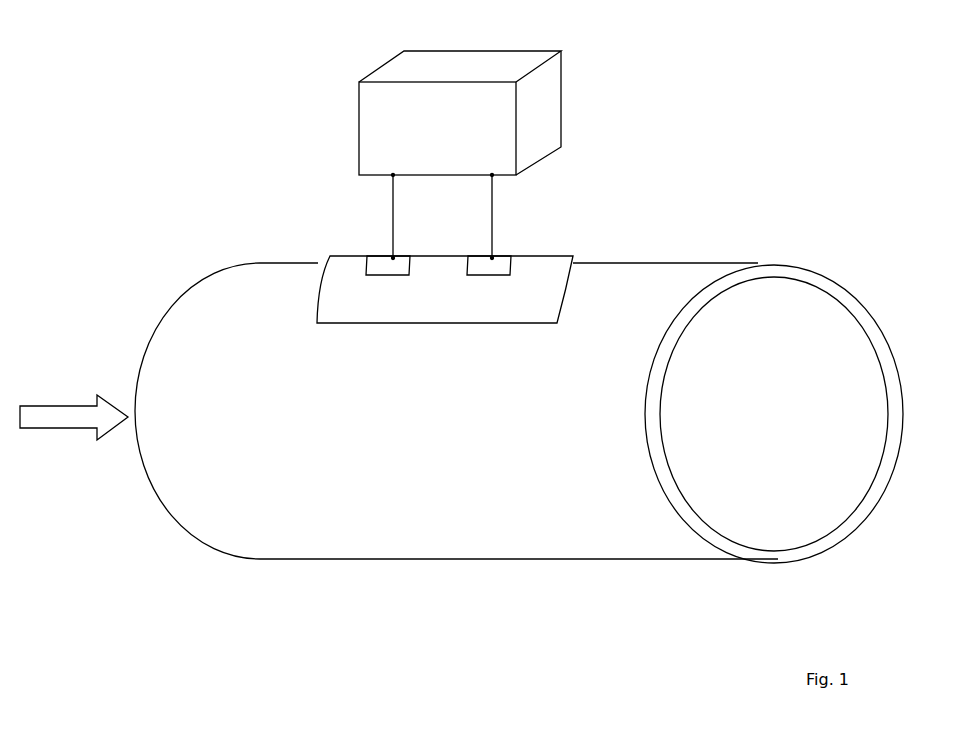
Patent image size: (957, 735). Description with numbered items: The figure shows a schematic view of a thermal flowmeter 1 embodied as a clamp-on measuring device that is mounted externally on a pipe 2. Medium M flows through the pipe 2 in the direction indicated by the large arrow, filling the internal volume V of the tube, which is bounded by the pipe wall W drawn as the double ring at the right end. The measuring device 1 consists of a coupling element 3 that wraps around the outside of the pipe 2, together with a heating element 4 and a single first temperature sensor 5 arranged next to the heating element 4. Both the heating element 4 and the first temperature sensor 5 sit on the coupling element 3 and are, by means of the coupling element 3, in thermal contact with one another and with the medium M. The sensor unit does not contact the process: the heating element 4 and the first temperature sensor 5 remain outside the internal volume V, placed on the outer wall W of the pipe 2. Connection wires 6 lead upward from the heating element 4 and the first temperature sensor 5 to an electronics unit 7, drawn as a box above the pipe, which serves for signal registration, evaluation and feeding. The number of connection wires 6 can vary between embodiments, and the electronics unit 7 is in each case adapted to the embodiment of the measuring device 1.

The thermal flowmeter 1 is at (221, 64).
The pipe 2 is at (261, 562).
The coupling element 3 is at (434, 319).
The heating element 4 is at (373, 263).
The first temperature sensor 5 is at (487, 261).
The connection wires 6 is at (486, 218).
The electronics unit 7 is at (460, 113).
The medium M is at (74, 411).
The internal volume V is at (775, 418).
The wall W is at (732, 542).